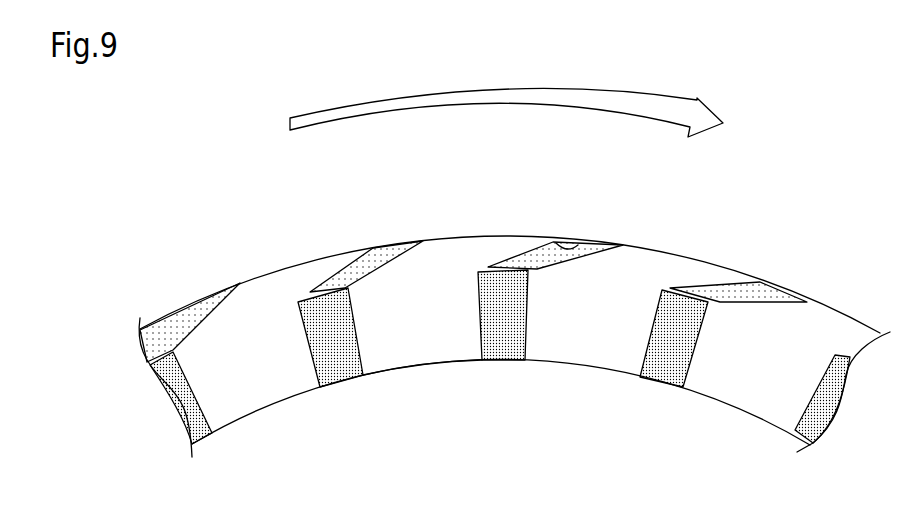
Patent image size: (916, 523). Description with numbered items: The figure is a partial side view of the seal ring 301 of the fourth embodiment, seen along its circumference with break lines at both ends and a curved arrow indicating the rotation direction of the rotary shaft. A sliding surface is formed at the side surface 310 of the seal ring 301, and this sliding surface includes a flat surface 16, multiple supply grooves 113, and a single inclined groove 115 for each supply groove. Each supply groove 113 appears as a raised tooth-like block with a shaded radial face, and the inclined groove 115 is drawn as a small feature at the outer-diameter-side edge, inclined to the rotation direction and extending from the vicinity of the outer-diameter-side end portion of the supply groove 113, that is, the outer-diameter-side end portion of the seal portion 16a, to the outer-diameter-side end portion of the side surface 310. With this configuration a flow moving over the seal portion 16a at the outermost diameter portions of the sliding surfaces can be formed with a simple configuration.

The seal ring 301 is at (262, 240).
The flat surface 16 is at (531, 303).
The seal portion 16a is at (550, 303).
The inclined groove 115 is at (574, 242).
The side surface 310 is at (405, 337).
The supply groove 113 is at (525, 317).